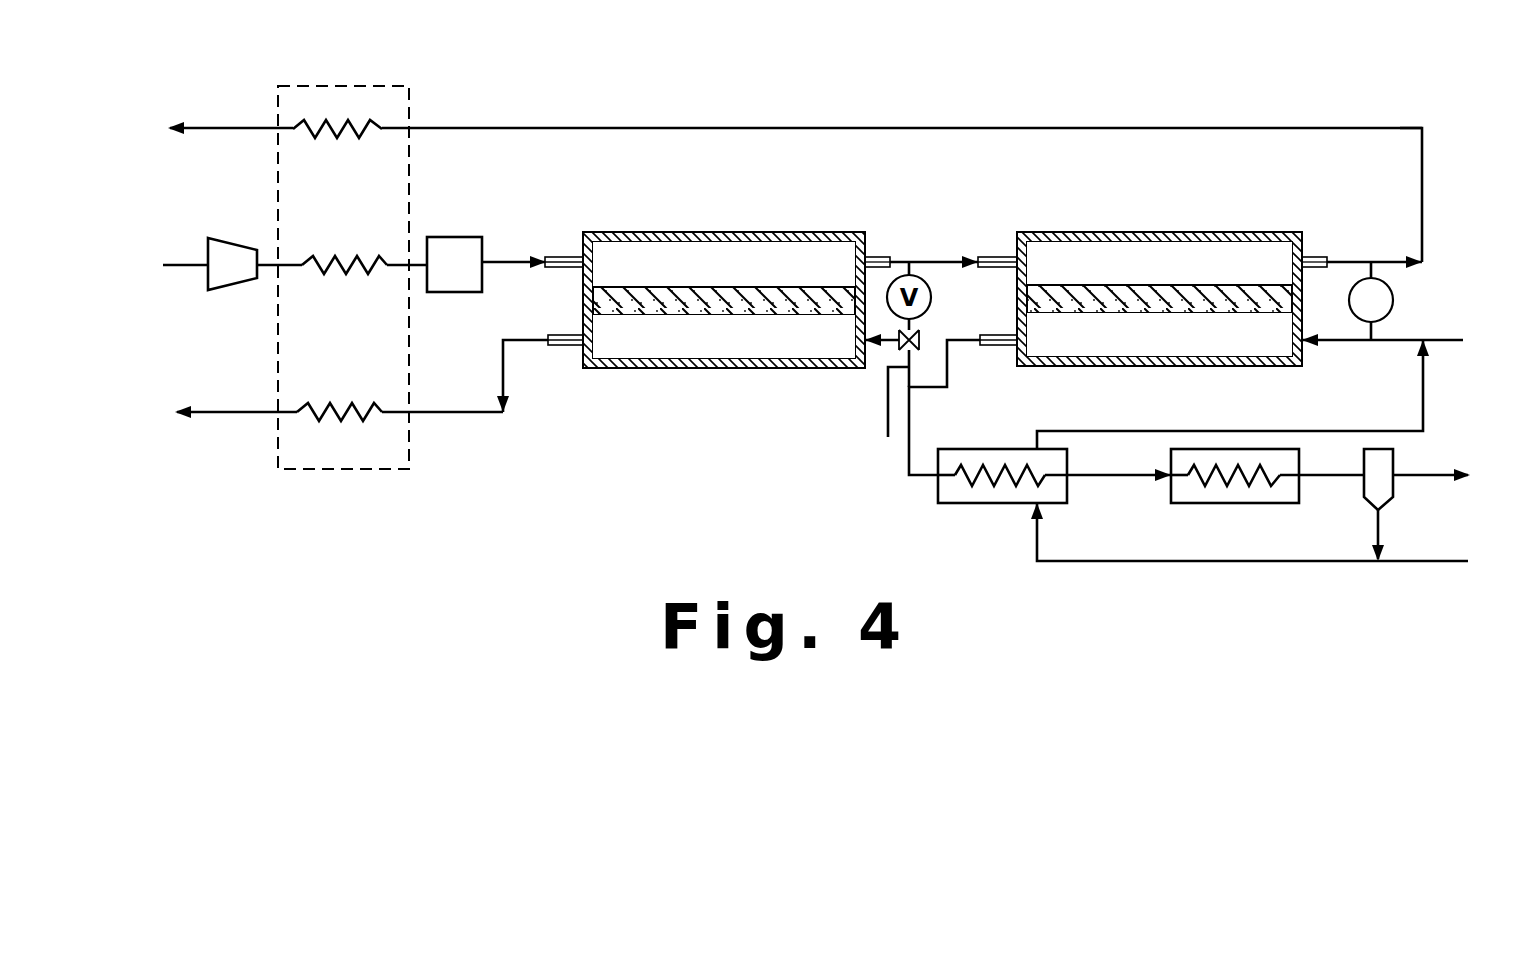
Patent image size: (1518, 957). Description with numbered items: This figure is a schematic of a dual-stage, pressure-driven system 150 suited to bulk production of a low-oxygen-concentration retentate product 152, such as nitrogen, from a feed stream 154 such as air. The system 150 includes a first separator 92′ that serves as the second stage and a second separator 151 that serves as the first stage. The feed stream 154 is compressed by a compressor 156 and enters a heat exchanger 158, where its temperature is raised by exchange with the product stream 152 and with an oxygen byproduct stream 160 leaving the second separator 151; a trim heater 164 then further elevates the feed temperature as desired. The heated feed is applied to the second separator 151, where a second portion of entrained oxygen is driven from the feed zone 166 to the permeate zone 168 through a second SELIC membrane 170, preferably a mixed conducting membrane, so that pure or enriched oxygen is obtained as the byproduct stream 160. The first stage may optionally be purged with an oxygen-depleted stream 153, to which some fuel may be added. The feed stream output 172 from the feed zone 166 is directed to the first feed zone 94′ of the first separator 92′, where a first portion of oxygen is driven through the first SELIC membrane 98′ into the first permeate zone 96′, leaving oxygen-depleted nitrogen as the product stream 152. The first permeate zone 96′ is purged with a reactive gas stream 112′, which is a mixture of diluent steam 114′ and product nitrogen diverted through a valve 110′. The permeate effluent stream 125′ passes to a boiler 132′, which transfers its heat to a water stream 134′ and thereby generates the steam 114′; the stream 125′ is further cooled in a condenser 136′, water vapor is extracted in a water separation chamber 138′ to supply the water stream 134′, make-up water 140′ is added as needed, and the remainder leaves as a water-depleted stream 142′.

The system 150 is at (1127, 80).
The second separator 151 is at (706, 295).
The retentate product stream 152 is at (1422, 166).
The oxygen-depleted stream 153 is at (887, 390).
The feed stream 154 is at (232, 250).
The compressor 156 is at (185, 268).
The heat exchanger 158 is at (385, 86).
The oxygen byproduct stream 160 is at (428, 413).
The trim heater 164 is at (452, 235).
The feed zone 166 is at (640, 252).
The permeate zone 168 is at (785, 351).
The second SELIC membrane 170 is at (593, 306).
The feed stream output 172 is at (923, 260).
The first separator 92′ is at (1144, 294).
The first feed zone 94′ is at (1077, 251).
The first permeate zone 96′ is at (1044, 348).
The first SELIC membrane 98′ is at (1027, 305).
The valve 110′ is at (1395, 298).
The reactive gas stream 112′ is at (1438, 343).
The diluent steam 114′ is at (1420, 413).
The stream 125′ is at (909, 430).
The boiler 132′ is at (937, 487).
The water stream 134′ is at (1035, 545).
The condenser 136′ is at (1240, 504).
The water separation chamber 138′ is at (1395, 458).
The make-up water 140′ is at (1413, 563).
The water-depleted stream 142′ is at (1408, 478).